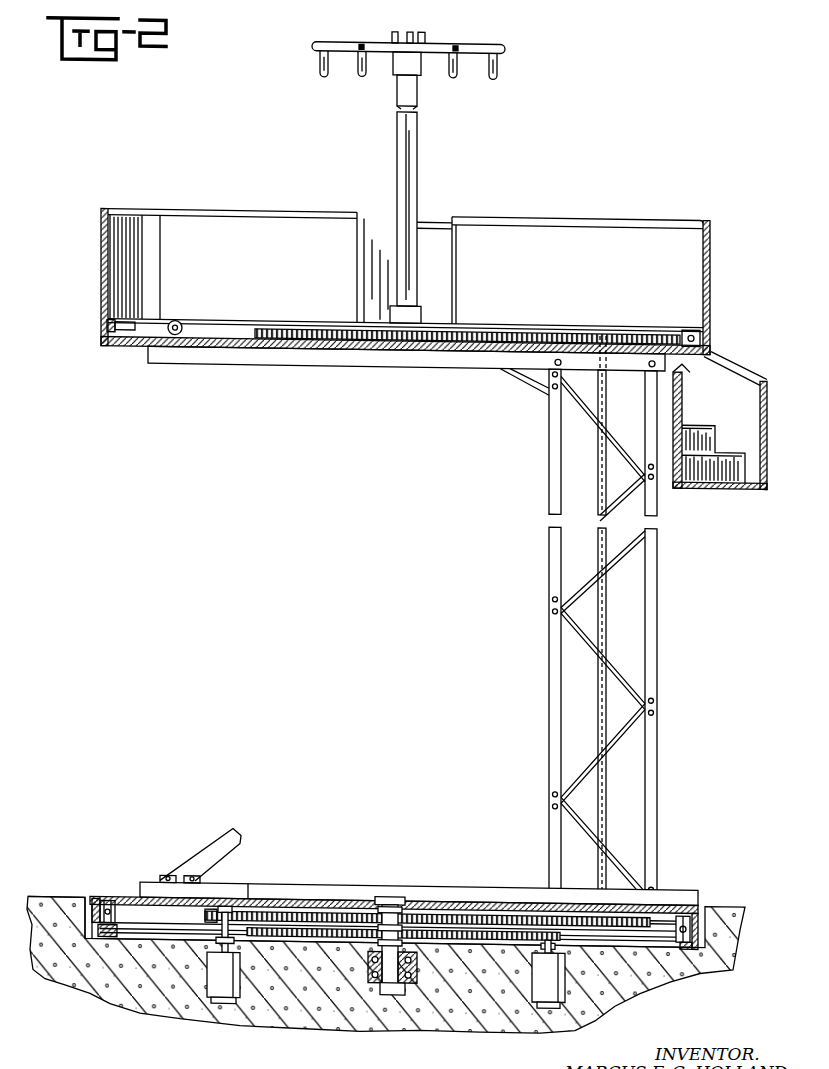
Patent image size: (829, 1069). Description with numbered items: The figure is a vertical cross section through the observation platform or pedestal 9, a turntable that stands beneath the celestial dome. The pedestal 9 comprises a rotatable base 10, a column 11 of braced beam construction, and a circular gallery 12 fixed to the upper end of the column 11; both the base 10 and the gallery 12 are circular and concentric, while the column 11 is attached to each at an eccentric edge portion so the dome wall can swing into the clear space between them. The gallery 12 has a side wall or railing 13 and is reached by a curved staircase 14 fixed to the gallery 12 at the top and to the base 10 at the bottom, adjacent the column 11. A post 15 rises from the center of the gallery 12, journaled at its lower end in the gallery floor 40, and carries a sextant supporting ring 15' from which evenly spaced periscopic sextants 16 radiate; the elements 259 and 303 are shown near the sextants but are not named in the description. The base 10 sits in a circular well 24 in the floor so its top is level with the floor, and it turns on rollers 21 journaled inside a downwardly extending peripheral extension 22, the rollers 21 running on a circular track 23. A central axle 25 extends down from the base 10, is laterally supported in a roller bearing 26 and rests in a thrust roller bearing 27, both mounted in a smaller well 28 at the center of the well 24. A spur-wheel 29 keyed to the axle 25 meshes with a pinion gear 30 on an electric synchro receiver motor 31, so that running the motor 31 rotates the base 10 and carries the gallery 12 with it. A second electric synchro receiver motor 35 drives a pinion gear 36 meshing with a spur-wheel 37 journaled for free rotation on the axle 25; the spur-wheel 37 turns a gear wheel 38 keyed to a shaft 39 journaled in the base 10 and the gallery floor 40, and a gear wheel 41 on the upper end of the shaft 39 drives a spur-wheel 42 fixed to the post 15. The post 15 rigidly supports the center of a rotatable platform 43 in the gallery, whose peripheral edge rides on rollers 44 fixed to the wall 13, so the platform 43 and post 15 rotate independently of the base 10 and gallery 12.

The pedestal 9 is at (341, 876).
The rotatable base 10 is at (680, 910).
The column 11 is at (659, 651).
The gallery 12 is at (581, 212).
The side wall 13 is at (711, 255).
The curved staircase 14 is at (768, 440).
The post 15 is at (422, 188).
The sextant supporting ring 15' is at (408, 39).
The periscopic sextants 16 is at (497, 67).
The supports 259 is at (391, 36).
The hook 303 is at (326, 79).
The rollers 21 is at (107, 905).
The peripheral extension 22 is at (94, 906).
The circular track 23 is at (112, 936).
The circular well 24 is at (88, 931).
The axle 25 is at (392, 897).
The roller bearing 26 is at (418, 969).
The thrust roller bearing 27 is at (383, 979).
The well 28 is at (370, 955).
The spur-wheel 29 is at (312, 930).
The pinion gear 30 is at (586, 950).
The electric synchro receiver motor 31 is at (552, 992).
The electric synchro receiver motor 35 is at (226, 992).
The pinion gear 36 is at (205, 918).
The spur-wheel 37 is at (448, 914).
The gear wheel 38 is at (658, 904).
The shaft 39 is at (598, 688).
The floor of the gallery 40 is at (324, 352).
The gear wheel 41 is at (672, 330).
The spur-wheel 42 is at (258, 334).
The rotatable platform 43 is at (205, 322).
The rollers 44 is at (175, 324).